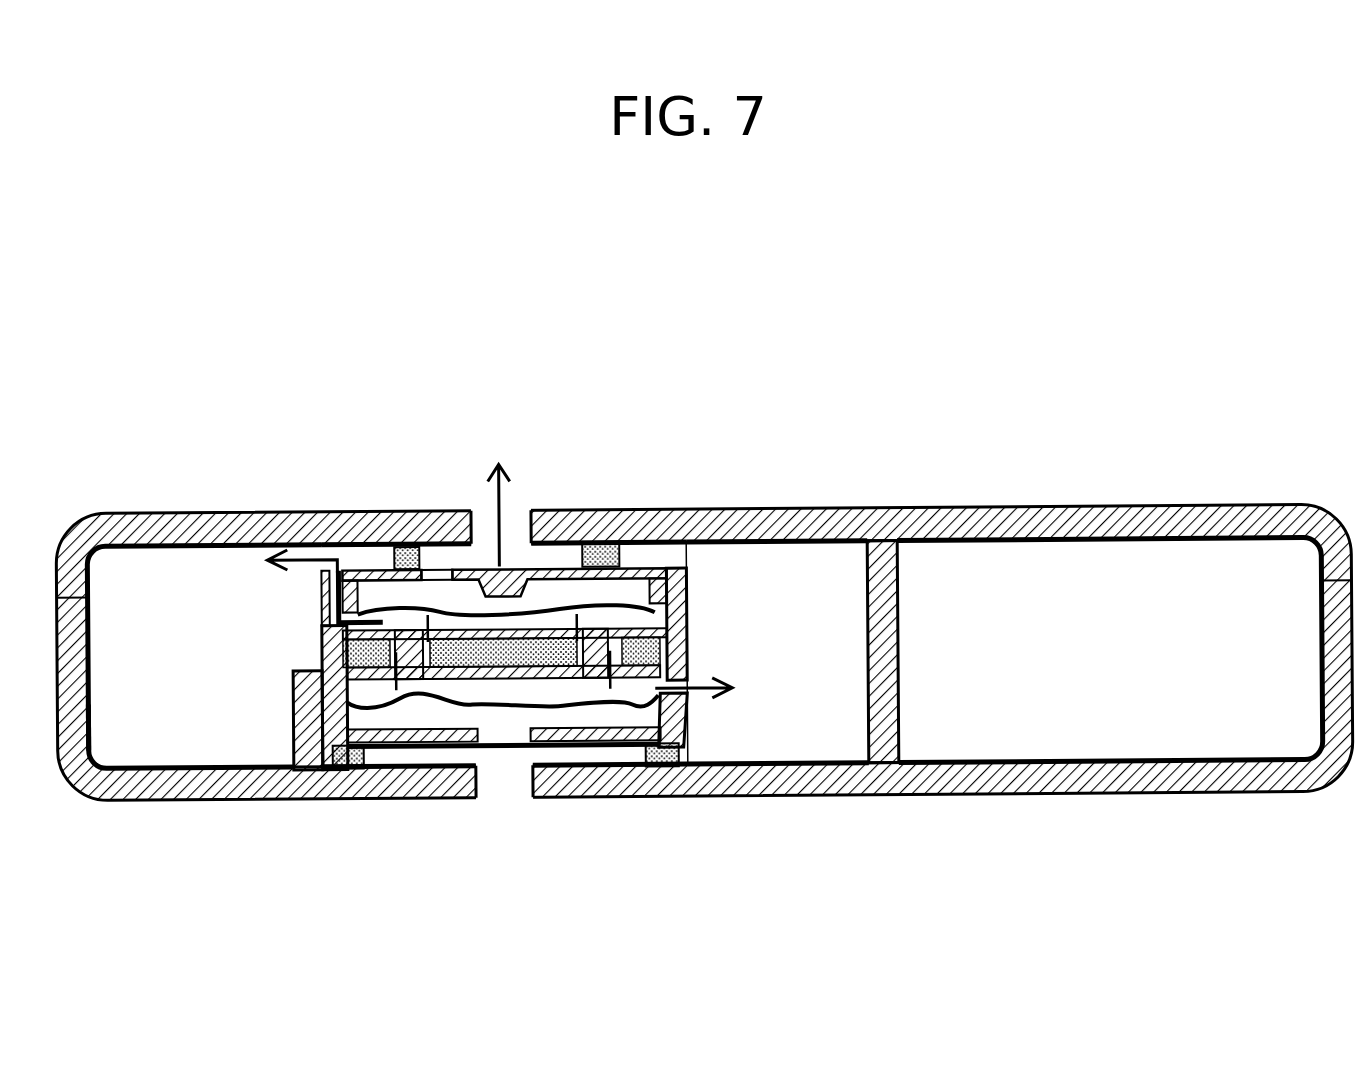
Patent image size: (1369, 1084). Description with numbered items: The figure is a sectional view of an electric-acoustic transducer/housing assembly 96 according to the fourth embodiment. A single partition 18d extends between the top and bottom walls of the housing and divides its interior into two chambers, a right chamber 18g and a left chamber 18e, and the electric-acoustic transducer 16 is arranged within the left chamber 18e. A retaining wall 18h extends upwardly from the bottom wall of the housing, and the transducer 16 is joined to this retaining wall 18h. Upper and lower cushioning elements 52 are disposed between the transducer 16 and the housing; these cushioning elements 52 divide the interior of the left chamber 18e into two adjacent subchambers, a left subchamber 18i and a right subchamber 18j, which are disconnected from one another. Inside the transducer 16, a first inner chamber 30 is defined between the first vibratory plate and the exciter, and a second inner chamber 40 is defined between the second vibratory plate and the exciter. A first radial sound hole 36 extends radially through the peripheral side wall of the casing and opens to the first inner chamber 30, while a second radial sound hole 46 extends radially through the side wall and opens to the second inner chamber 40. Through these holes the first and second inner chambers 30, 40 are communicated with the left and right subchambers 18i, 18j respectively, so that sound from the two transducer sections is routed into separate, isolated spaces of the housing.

The electric-acoustic transducer/housing assembly 96 is at (708, 314).
The electric-acoustic transducer 16 is at (548, 562).
The partition 18d is at (885, 680).
The left chamber 18e is at (713, 597).
The right chamber 18g is at (1138, 597).
The retaining wall 18h is at (293, 690).
The left subchamber 18i is at (128, 590).
The right subchamber 18j is at (808, 597).
The first inner chamber 30 is at (400, 618).
The first radial sound hole 36 is at (348, 562).
The second inner chamber 40 is at (503, 694).
The second radial sound hole 46 is at (687, 697).
The cushioning elements 52 is at (402, 545).